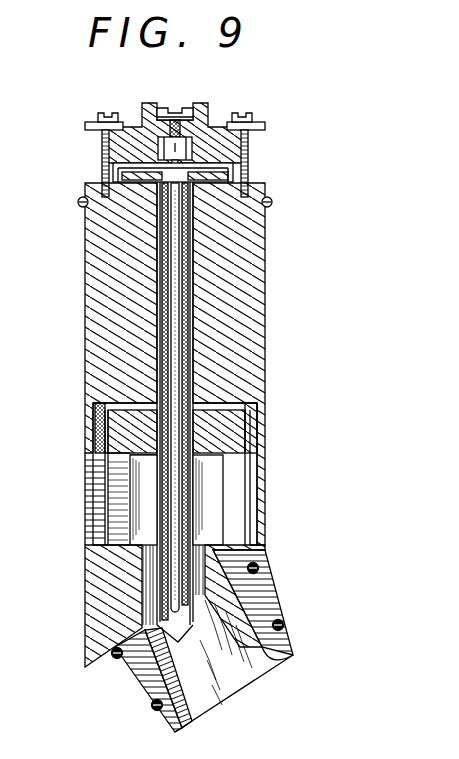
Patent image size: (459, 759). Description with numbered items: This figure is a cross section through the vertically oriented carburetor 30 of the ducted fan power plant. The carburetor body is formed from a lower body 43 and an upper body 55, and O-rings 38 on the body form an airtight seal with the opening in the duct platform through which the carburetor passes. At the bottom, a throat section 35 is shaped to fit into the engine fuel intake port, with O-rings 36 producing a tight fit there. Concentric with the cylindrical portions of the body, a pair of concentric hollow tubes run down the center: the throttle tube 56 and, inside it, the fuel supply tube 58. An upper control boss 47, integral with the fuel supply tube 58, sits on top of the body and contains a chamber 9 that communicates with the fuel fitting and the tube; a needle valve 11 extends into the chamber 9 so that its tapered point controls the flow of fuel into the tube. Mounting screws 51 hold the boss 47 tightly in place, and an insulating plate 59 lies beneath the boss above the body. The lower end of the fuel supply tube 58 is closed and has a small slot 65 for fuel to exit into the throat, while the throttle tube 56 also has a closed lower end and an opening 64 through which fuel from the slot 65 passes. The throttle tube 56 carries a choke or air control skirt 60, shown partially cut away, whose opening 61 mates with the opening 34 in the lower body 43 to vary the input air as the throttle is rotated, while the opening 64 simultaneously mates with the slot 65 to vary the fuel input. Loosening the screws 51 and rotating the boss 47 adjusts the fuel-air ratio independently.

The carburetor 30 is at (60, 308).
The upper control boss 47 is at (209, 117).
The needle valve 11 is at (165, 107).
The chamber 9 is at (194, 148).
The mounting screws 51 is at (103, 162).
The insulating plate 59 is at (139, 180).
The upper body 55 is at (96, 240).
The O-rings 38 is at (78, 203).
The throttle tube 56 is at (162, 305).
The fuel supply tube 58 is at (180, 257).
The opening in skirt 61 is at (113, 443).
The choke or air control skirt 60 is at (176, 431).
The opening in lower body portion 34 is at (92, 527).
The slot 65 is at (178, 543).
The opening 64 is at (196, 556).
The lower body 43 is at (92, 590).
The throat section 35 is at (228, 690).
The O-rings 36 is at (152, 703).